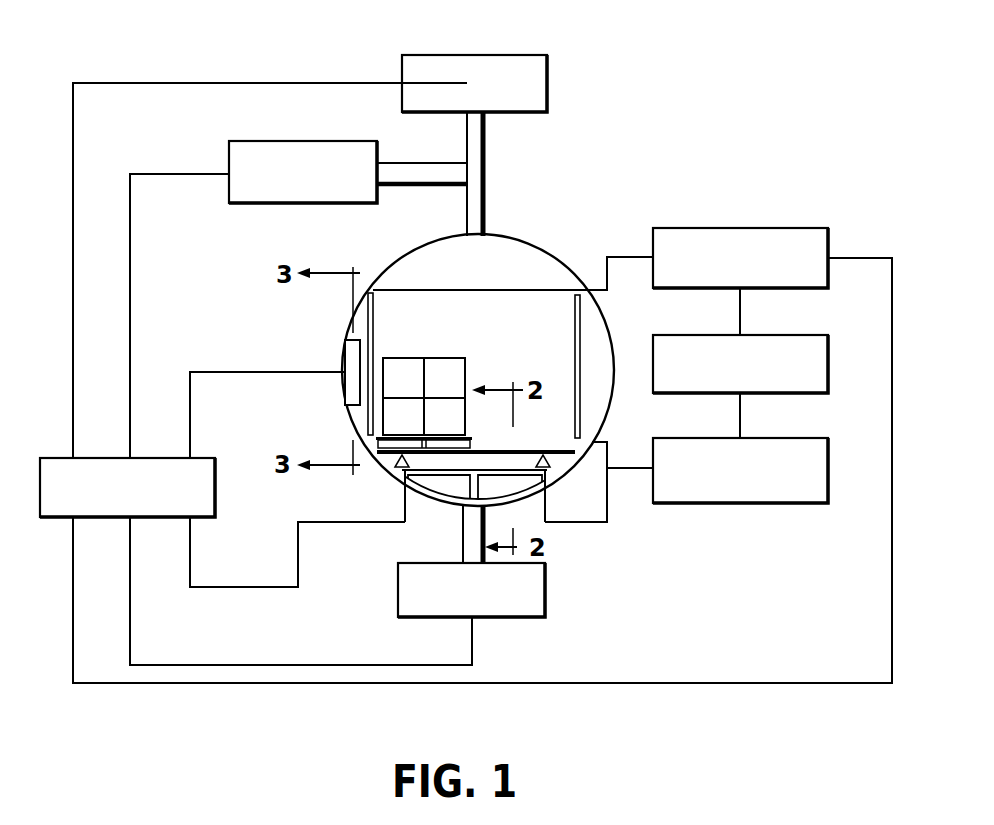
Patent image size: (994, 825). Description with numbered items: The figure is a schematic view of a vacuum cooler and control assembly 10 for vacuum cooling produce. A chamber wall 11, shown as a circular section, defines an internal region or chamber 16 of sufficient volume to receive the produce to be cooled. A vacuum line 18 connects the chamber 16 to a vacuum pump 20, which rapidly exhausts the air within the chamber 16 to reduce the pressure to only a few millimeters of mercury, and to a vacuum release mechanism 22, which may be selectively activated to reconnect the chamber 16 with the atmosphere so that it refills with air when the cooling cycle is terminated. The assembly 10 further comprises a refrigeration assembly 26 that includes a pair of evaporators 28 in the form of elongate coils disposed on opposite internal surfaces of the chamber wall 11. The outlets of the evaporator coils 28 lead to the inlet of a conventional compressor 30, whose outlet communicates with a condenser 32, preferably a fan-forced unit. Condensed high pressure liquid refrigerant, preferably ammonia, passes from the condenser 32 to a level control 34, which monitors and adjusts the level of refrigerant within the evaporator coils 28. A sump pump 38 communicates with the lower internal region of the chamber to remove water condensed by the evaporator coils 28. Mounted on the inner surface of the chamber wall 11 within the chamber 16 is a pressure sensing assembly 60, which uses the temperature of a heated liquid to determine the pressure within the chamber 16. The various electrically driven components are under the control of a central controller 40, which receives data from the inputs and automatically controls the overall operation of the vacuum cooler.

The vacuum cooler and control assembly 10 is at (765, 95).
The chamber wall 11 is at (400, 252).
The chamber 16 is at (510, 263).
The vacuum line 18 is at (478, 152).
The vacuum pump 20 is at (540, 63).
The vacuum release mechanism 22 is at (243, 148).
The refrigeration assembly 26 is at (903, 310).
The evaporators 28 is at (352, 322).
The compressor 30 is at (817, 233).
The condenser 32 is at (813, 343).
The level control 34 is at (810, 448).
The sump pump 38 is at (533, 590).
The controller 40 is at (203, 463).
The pressure sensing assembly 60 is at (335, 352).